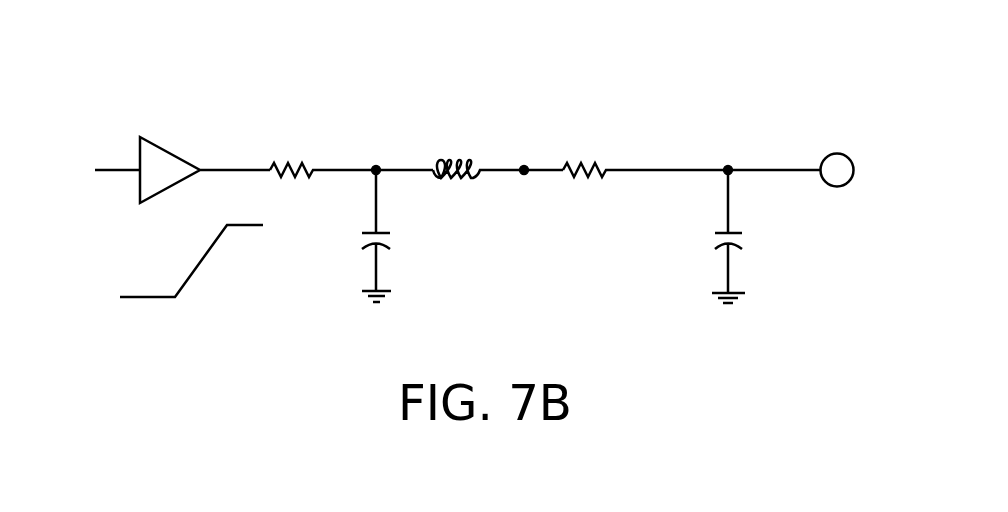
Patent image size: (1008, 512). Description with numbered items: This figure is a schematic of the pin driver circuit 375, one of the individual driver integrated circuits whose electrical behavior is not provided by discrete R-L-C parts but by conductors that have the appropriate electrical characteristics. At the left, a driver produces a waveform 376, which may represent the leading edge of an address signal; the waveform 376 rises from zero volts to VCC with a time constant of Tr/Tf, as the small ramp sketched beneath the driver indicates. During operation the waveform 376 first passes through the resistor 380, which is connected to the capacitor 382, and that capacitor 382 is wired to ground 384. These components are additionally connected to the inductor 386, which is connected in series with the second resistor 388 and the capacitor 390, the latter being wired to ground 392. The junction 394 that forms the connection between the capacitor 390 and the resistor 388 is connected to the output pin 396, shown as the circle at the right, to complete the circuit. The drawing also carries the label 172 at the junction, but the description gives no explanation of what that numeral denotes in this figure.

The driver circuit 375 is at (538, 66).
The waveform 376 is at (147, 186).
The resistor 380 is at (268, 168).
The capacitor 382 is at (362, 242).
The ground 384 is at (366, 300).
The inductor 386 is at (477, 179).
The second resistor 388 is at (585, 180).
The capacitor 390 is at (742, 241).
The ground 392 is at (745, 297).
The junction 394 is at (728, 170).
The output pin 396 is at (848, 183).
The output trace 172 is at (728, 170).